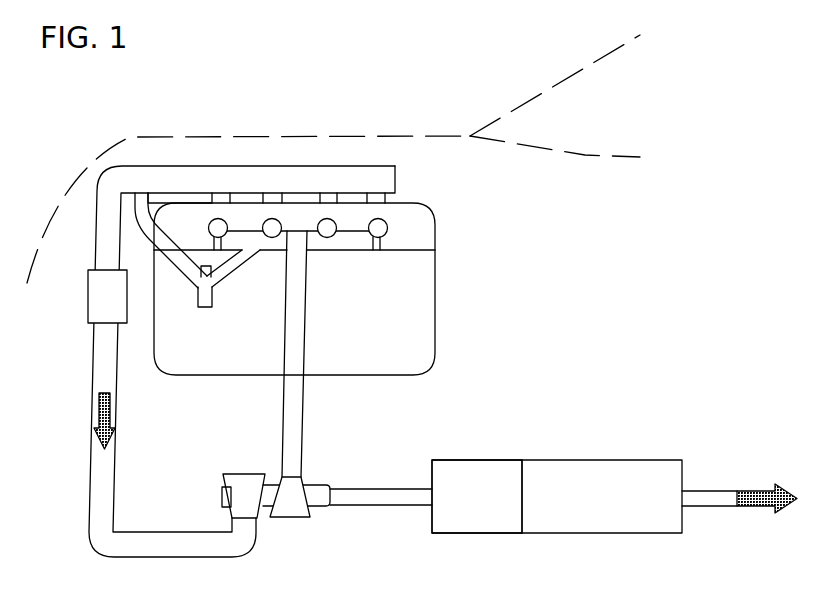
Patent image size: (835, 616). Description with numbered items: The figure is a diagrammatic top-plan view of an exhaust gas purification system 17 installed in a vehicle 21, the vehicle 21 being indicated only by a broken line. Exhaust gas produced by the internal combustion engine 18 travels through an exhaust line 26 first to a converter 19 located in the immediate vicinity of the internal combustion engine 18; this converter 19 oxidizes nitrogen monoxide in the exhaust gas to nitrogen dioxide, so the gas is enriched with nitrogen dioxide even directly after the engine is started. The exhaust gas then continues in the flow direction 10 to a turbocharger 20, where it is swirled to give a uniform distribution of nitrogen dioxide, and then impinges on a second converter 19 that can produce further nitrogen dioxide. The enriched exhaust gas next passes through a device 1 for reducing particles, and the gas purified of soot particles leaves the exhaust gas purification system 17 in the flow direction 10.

The device for reducing particles 1 is at (610, 518).
The flow direction 10 is at (97, 412).
The exhaust gas purification system 17 is at (527, 427).
The internal combustion engine 18 is at (415, 297).
The converter 19 is at (103, 306).
The turbocharger 20 is at (290, 492).
The vehicle 21 is at (400, 135).
The exhaust line 26 is at (100, 538).